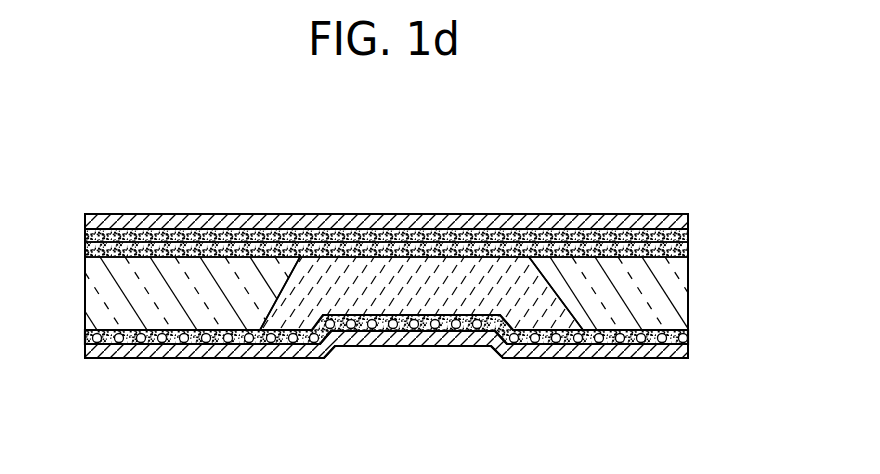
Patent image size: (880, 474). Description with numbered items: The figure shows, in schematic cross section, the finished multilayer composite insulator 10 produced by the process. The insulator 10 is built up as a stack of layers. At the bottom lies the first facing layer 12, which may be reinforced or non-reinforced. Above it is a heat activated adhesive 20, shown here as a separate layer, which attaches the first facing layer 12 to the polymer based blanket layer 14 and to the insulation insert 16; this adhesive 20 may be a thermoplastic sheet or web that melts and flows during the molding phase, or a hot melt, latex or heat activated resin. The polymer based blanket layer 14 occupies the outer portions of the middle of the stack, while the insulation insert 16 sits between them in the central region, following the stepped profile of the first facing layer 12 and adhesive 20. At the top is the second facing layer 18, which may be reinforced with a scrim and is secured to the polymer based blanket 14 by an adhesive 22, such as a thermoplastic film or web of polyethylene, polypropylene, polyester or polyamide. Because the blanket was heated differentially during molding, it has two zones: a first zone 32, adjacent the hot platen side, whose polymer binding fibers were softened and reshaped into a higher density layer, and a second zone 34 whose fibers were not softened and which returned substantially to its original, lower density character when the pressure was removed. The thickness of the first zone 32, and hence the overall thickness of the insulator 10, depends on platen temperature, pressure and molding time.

The multilayer composite insulator 10 is at (531, 143).
The first facing layer 12 is at (225, 355).
The polymer based blanket layer 14 is at (155, 292).
The insulation insert 16 is at (402, 276).
The second facing layer 18 is at (652, 214).
The heat activated adhesive 20 is at (672, 329).
The adhesive 22 is at (688, 235).
The first zone 32 is at (688, 245).
The second zone 34 is at (653, 283).